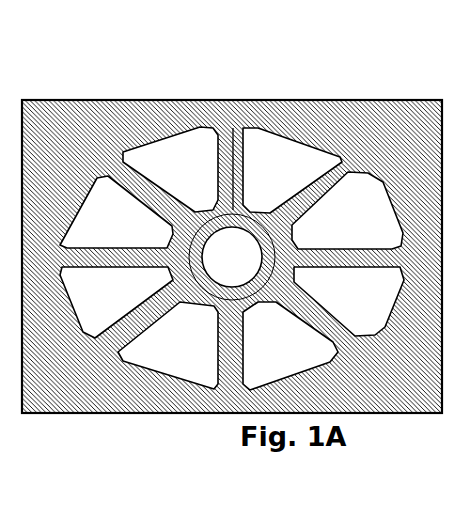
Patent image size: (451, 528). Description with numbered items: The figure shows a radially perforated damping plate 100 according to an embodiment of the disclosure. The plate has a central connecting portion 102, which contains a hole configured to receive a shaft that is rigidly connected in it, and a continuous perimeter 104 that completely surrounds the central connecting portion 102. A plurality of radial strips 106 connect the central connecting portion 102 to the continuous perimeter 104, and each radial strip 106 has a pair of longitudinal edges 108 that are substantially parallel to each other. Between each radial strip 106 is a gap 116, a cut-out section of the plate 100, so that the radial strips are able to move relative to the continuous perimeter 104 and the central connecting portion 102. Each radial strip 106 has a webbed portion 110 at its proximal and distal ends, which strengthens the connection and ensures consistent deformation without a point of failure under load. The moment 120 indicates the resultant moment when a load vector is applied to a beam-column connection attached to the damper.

The radially perforated damping plate 100 is at (122, 92).
The central connecting portion 102 is at (207, 263).
The continuous perimeter 104 is at (133, 413).
The radial strip 106 is at (230, 352).
The longitudinal edges 108 is at (357, 452).
The webbed portion 110 is at (323, 148).
The gap 116 is at (372, 222).
The moment 120 is at (214, 221).